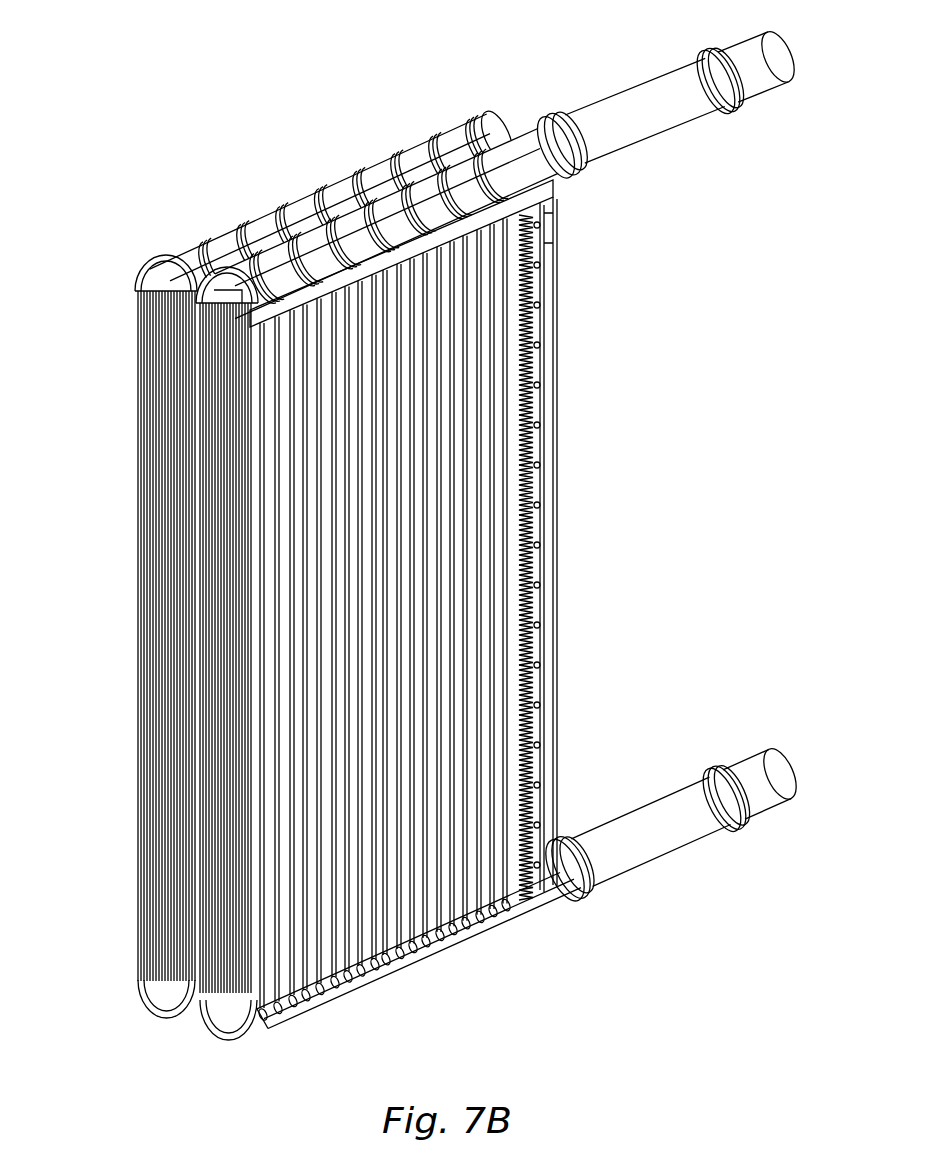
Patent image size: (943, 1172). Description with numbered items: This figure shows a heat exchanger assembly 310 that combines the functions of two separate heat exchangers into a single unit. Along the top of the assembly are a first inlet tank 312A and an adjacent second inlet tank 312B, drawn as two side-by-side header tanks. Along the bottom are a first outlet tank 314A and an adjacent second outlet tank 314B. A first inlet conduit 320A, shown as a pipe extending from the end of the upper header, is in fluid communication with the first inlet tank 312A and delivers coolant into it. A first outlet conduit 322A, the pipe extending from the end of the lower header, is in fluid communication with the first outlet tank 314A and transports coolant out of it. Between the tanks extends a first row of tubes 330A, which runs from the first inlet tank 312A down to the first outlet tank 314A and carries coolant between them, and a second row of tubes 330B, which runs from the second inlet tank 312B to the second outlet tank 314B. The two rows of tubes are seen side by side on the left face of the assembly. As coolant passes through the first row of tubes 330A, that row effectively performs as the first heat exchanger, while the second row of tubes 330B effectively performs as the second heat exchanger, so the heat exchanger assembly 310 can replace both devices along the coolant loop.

The heat exchanger assembly 310 is at (265, 70).
The first inlet tank 312A is at (520, 147).
The second inlet tank 312B is at (430, 138).
The first outlet tank 314A is at (460, 930).
The second outlet tank 314B is at (173, 1000).
The first inlet conduit 320A is at (750, 84).
The first outlet conduit 322A is at (760, 788).
The first row of tubes 330A is at (212, 283).
The second row of tubes 330B is at (143, 262).